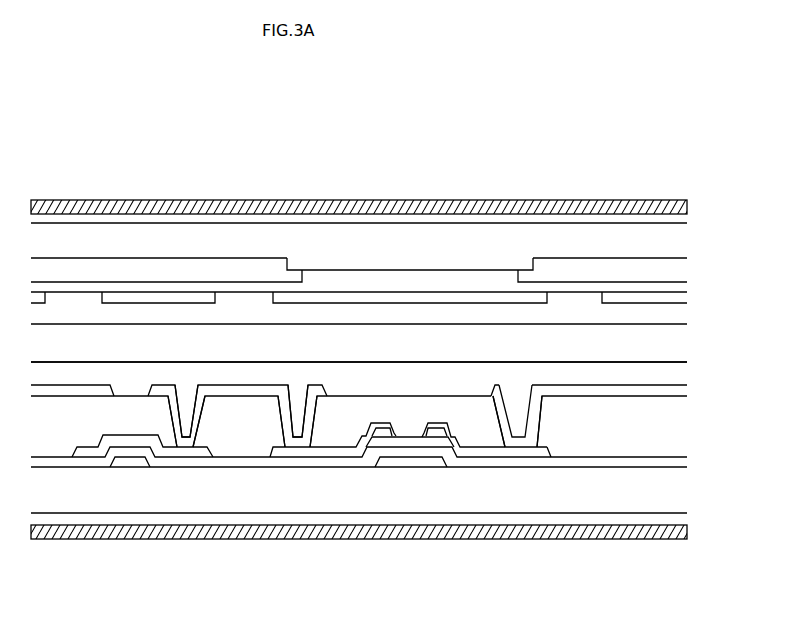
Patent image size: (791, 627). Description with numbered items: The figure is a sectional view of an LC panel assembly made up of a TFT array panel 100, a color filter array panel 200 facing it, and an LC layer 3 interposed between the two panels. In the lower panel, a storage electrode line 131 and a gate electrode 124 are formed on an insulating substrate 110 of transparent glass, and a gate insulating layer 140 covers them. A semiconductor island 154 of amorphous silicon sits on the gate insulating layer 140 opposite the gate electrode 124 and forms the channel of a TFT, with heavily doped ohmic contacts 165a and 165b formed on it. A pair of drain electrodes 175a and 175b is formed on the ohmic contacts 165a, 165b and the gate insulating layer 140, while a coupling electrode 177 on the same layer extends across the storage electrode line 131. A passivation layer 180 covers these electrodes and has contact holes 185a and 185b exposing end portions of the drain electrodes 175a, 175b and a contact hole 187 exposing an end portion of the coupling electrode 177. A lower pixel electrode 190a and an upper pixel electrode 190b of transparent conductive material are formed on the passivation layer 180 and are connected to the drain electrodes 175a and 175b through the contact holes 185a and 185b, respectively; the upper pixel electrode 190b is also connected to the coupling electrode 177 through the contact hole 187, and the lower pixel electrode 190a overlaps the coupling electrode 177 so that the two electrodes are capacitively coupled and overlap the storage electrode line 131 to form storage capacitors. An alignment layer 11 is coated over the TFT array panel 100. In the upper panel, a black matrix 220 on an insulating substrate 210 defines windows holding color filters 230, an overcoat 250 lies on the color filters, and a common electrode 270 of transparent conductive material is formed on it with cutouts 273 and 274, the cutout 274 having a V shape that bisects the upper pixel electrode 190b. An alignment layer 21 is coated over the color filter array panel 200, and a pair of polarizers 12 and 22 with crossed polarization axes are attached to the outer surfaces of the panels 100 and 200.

The polarizer 22 is at (565, 202).
The color filter array panel 200 is at (697, 230).
The insulating substrate 210 is at (423, 229).
The color filter 230 is at (153, 272).
The black matrix 220 is at (387, 265).
The overcoat 250 is at (335, 283).
The common electrode 270 is at (492, 300).
The cutout 274 is at (241, 311).
The cutout 273 is at (73, 308).
The alignment layer 21 is at (667, 313).
The LC layer 3 is at (672, 344).
The alignment layer 11 is at (672, 376).
The TFT array panel 100 is at (693, 457).
The lower pixel electrode 190a is at (87, 388).
The upper pixel electrode 190b is at (216, 392).
The passivation layer 180 is at (352, 405).
The contact hole 187 is at (185, 390).
The contact hole 185b is at (298, 390).
The contact hole 185a is at (518, 390).
The coupling electrode 177 is at (169, 446).
The storage electrode line 131 is at (128, 468).
The gate insulating layer 140 is at (462, 458).
The gate electrode 124 is at (418, 464).
The semiconductor island 154 is at (386, 440).
The ohmic contact 165b is at (391, 430).
The ohmic contact 165a is at (433, 430).
The drain electrode 175b is at (288, 448).
The drain electrode 175a is at (514, 448).
The insulating substrate 110 is at (322, 498).
The polarizer 12 is at (600, 541).